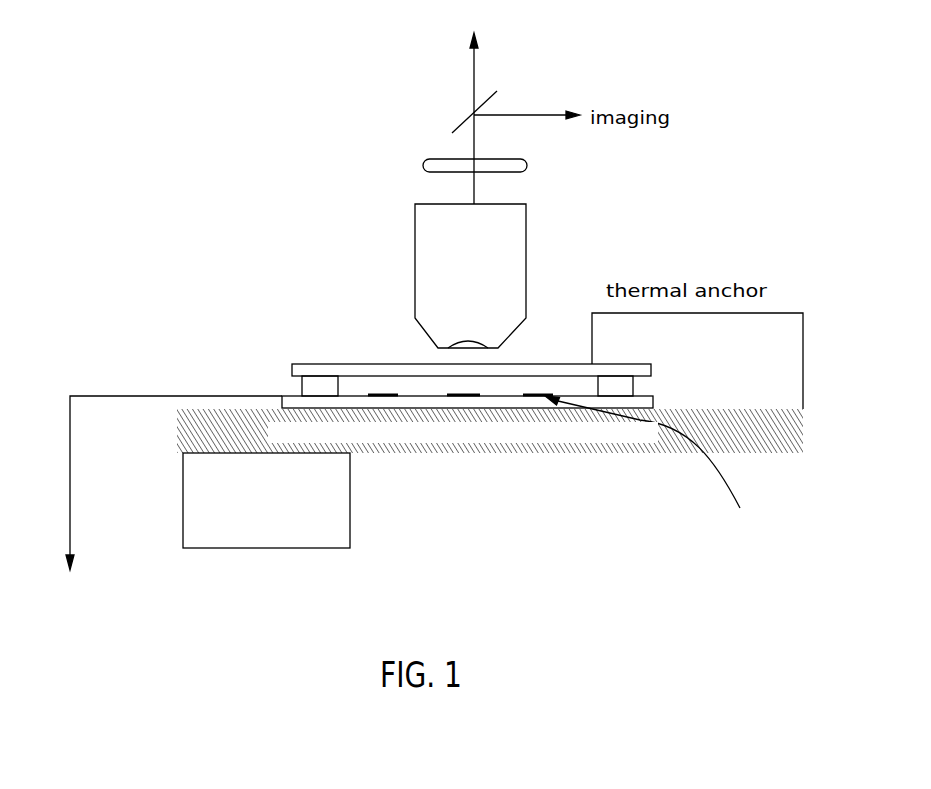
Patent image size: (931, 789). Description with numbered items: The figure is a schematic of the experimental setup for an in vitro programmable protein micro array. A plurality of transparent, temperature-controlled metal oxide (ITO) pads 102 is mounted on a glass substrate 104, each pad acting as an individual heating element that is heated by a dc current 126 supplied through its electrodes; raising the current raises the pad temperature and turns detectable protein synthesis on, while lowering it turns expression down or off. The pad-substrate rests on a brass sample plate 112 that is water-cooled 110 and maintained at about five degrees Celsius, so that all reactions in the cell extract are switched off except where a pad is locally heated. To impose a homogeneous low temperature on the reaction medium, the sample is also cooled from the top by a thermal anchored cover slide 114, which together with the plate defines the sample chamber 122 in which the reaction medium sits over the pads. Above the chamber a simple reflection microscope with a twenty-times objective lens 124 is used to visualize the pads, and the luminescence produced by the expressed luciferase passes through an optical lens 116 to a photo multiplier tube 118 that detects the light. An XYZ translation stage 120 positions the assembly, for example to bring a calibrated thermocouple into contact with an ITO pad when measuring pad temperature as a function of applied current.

The temperature-controlled metal oxide pads 102 is at (542, 394).
The substrate 104 is at (655, 403).
The water-cooled bath 110 is at (433, 443).
The brass sample plate 112 is at (177, 425).
The thermal anchored cover slide 114 is at (581, 364).
The optical lens 116 is at (527, 170).
The photo multiplier tube 118 is at (474, 69).
The XYZ translation stage 120 is at (295, 548).
The sample chamber 122 is at (408, 387).
The 20X objective lens 124 is at (415, 220).
The dc current 126 is at (163, 501).